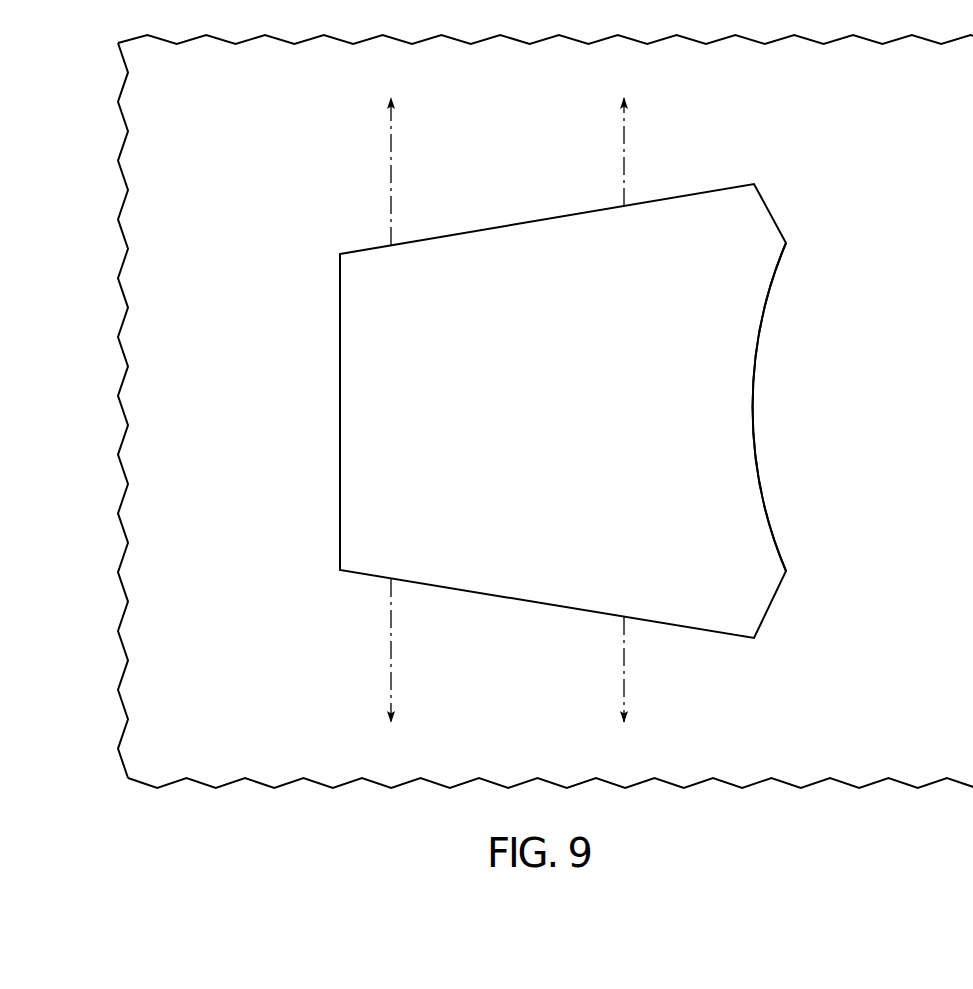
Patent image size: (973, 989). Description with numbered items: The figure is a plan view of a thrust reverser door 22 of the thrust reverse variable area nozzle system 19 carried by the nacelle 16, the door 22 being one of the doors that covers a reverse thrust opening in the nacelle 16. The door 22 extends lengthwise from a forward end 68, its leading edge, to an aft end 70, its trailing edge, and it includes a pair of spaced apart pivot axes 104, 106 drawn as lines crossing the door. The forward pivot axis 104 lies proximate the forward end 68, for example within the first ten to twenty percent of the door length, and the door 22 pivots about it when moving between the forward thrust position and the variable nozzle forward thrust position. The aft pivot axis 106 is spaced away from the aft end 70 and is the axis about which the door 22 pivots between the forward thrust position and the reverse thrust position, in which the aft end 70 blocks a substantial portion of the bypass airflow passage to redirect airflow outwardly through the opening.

The nacelle 16 is at (122, 175).
The thrust reverse variable area nozzle system 19 is at (878, 138).
The thrust reverser door 22 is at (711, 192).
The forward end 68 is at (340, 418).
The aft end 70 is at (752, 402).
The forward pivot axis 104 is at (391, 674).
The aft pivot axis 106 is at (624, 674).